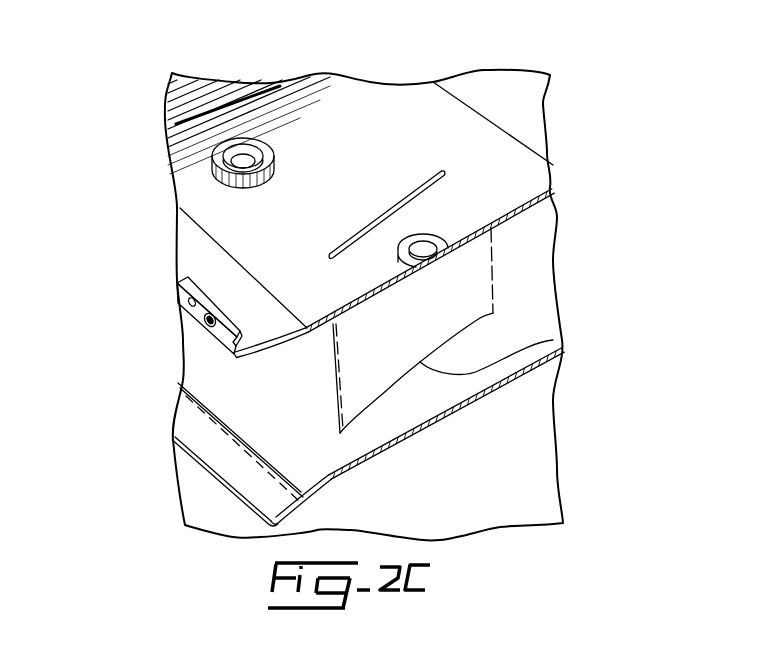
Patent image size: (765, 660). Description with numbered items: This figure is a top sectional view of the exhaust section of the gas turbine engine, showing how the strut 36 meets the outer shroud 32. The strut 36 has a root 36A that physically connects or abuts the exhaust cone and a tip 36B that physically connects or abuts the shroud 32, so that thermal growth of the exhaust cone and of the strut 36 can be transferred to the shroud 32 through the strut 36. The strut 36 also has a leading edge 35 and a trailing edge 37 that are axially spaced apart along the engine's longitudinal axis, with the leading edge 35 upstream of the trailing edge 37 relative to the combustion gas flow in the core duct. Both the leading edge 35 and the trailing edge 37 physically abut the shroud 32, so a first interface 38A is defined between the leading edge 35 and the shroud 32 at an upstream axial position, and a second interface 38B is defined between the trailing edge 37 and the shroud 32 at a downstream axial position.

The outer shroud 32 is at (298, 165).
The second interface 38B is at (416, 166).
The strut 36 is at (470, 258).
The tip 36B is at (343, 243).
The first interface 38A is at (302, 256).
The trailing edge 37 is at (490, 267).
The root 36A is at (553, 340).
The leading edge 35 is at (180, 396).